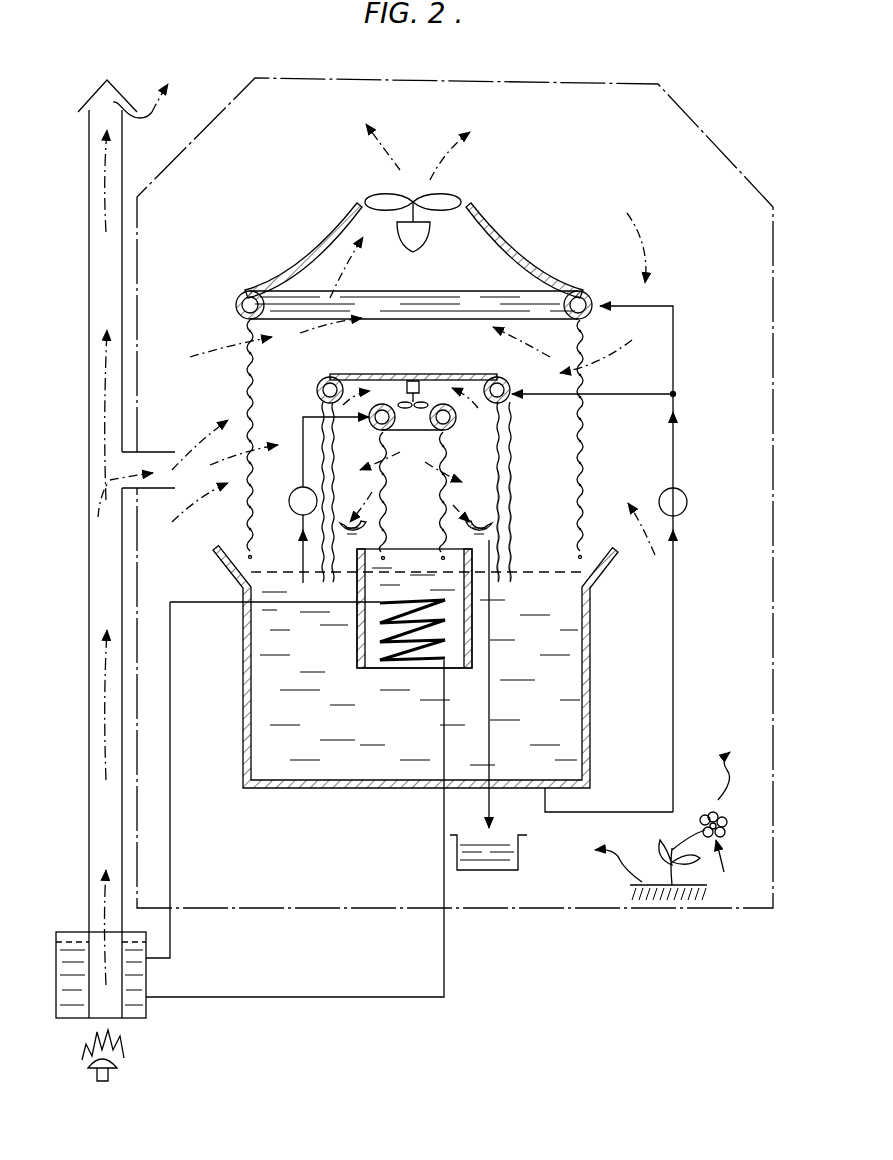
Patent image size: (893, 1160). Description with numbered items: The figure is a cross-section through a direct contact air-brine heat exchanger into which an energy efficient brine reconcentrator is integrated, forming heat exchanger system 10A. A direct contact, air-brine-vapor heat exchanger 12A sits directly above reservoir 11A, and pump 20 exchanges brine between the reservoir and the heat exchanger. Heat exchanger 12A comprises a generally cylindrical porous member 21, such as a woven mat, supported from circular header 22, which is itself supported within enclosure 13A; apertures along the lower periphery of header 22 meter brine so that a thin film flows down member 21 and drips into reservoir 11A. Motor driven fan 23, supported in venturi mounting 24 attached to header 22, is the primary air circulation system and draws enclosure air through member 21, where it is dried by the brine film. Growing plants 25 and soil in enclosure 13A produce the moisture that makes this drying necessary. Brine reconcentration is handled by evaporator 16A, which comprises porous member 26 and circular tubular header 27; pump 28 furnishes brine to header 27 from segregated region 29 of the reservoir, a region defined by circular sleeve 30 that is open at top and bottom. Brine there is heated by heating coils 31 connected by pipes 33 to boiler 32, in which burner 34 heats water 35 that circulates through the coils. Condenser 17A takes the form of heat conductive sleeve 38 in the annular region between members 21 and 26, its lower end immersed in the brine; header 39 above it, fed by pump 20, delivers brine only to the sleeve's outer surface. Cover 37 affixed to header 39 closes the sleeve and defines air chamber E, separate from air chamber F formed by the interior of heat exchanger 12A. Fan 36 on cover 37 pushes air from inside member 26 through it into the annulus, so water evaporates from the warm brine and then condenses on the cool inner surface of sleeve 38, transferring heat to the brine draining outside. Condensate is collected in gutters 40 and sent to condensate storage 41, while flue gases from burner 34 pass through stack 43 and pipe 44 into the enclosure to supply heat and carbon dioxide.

The heat exchanger system 10A is at (326, 928).
The reservoir 11A is at (596, 676).
The direct contact, air-brine-vapor heat exchanger 12A is at (522, 240).
The enclosure 13A is at (729, 150).
The evaporator 16A is at (510, 468).
The condenser 17A is at (514, 432).
The pump 20 is at (682, 494).
The porous member 21 is at (588, 478).
The header 22 is at (590, 291).
The motor driven fan 23 is at (465, 185).
The venturi mounting 24 is at (306, 257).
The growing plants 25 is at (725, 822).
The porous member 26 is at (450, 480).
The header 27 is at (456, 428).
The pump 28 is at (296, 512).
The segregated region 29 is at (432, 672).
The circular sleeve 30 is at (357, 650).
The heating coils 31 is at (432, 575).
The boiler 32 is at (148, 998).
The pipes 33 is at (444, 892).
The burner 34 is at (110, 1078).
The water 35 is at (74, 944).
The fan 36 is at (420, 380).
The cover 37 is at (390, 372).
The heat conductive sleeve 38 is at (328, 455).
The header 39 is at (318, 388).
The gutters 40 is at (365, 525).
The condensate storage 41 is at (520, 860).
The stack 43 is at (88, 662).
The pipe 44 is at (160, 450).
The air chamber E is at (482, 514).
The air chamber F is at (563, 553).